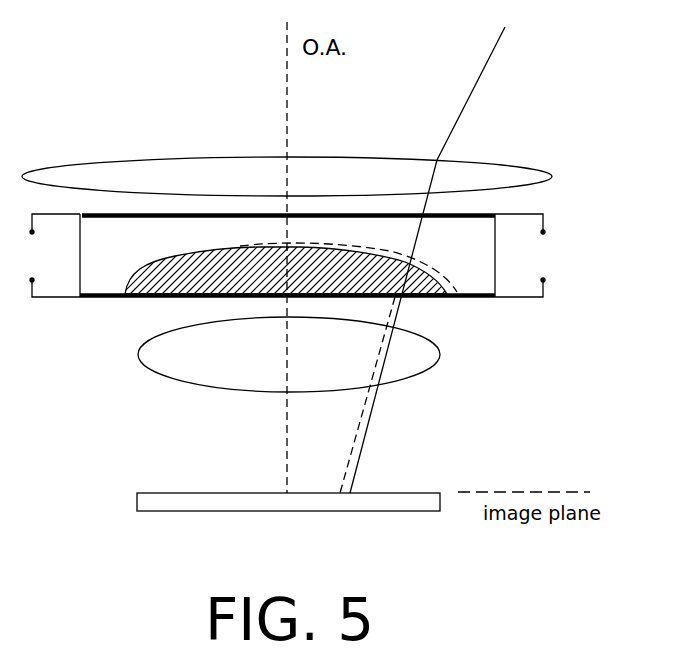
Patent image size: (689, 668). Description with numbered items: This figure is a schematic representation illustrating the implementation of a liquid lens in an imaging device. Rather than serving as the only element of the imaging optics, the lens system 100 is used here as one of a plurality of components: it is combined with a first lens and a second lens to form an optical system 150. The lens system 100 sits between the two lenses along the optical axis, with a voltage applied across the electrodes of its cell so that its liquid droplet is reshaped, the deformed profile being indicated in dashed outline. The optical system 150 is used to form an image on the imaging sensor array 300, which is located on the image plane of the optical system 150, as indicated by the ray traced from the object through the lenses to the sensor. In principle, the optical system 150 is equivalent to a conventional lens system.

The lens system 100 is at (112, 298).
The optical system 150 is at (329, 262).
The imaging sensor array 300 is at (165, 492).